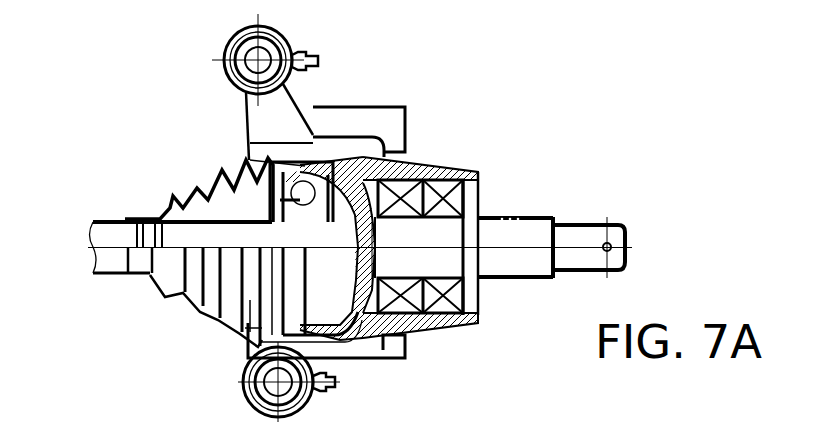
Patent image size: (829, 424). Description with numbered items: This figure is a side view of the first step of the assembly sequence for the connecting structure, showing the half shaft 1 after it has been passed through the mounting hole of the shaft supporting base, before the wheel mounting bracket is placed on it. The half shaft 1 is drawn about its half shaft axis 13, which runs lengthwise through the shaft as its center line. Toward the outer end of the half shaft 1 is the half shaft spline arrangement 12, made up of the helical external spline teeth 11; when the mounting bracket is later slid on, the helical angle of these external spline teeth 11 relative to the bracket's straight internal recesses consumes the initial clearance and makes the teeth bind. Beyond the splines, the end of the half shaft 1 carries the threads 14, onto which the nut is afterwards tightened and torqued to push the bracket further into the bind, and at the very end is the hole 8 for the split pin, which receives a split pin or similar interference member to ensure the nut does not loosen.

The half shaft 1 is at (122, 220).
The half shaft axis 13 is at (88, 235).
The helical external spline teeth 11 is at (519, 217).
The half shaft spline arrangement 12 is at (510, 200).
The threads on the end of the half shaft 14 is at (583, 222).
The hole for the split pin 8 is at (613, 225).